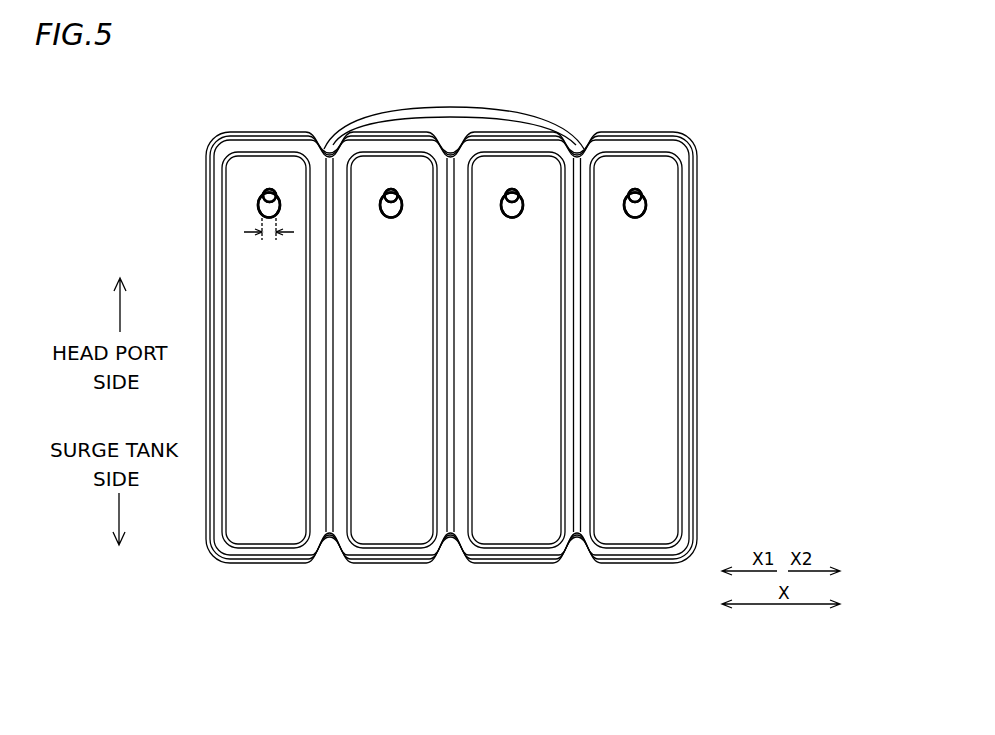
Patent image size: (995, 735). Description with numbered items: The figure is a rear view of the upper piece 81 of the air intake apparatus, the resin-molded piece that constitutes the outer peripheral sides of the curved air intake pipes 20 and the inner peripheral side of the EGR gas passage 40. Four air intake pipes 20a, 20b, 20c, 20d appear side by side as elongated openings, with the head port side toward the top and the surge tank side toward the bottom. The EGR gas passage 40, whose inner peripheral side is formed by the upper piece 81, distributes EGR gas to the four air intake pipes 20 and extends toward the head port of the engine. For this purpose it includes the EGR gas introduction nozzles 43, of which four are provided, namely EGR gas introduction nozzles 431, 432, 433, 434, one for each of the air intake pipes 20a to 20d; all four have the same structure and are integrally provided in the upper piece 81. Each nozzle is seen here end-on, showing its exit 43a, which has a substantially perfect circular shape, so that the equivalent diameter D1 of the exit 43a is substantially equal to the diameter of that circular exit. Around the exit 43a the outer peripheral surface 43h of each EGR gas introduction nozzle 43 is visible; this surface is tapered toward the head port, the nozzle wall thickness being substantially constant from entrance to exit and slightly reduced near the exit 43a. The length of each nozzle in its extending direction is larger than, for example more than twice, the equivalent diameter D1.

The upper piece 81 is at (172, 136).
The EGR gas passage 40 is at (459, 106).
The air intake pipes 20 is at (455, 387).
The air intake pipe 20a is at (287, 528).
The air intake pipe 20b is at (393, 528).
The air intake pipe 20c is at (512, 528).
The air intake pipe 20d is at (628, 528).
The EGR gas introduction nozzles 43 is at (457, 144).
The EGR gas introduction nozzle 431 is at (270, 188).
The EGR gas introduction nozzle 432 is at (391, 188).
The EGR gas introduction nozzle 433 is at (512, 188).
The EGR gas introduction nozzle 434 is at (635, 188).
The exit 43a is at (263, 194).
The outer peripheral surface 43h is at (258, 209).
The equivalent diameter D1 is at (270, 236).